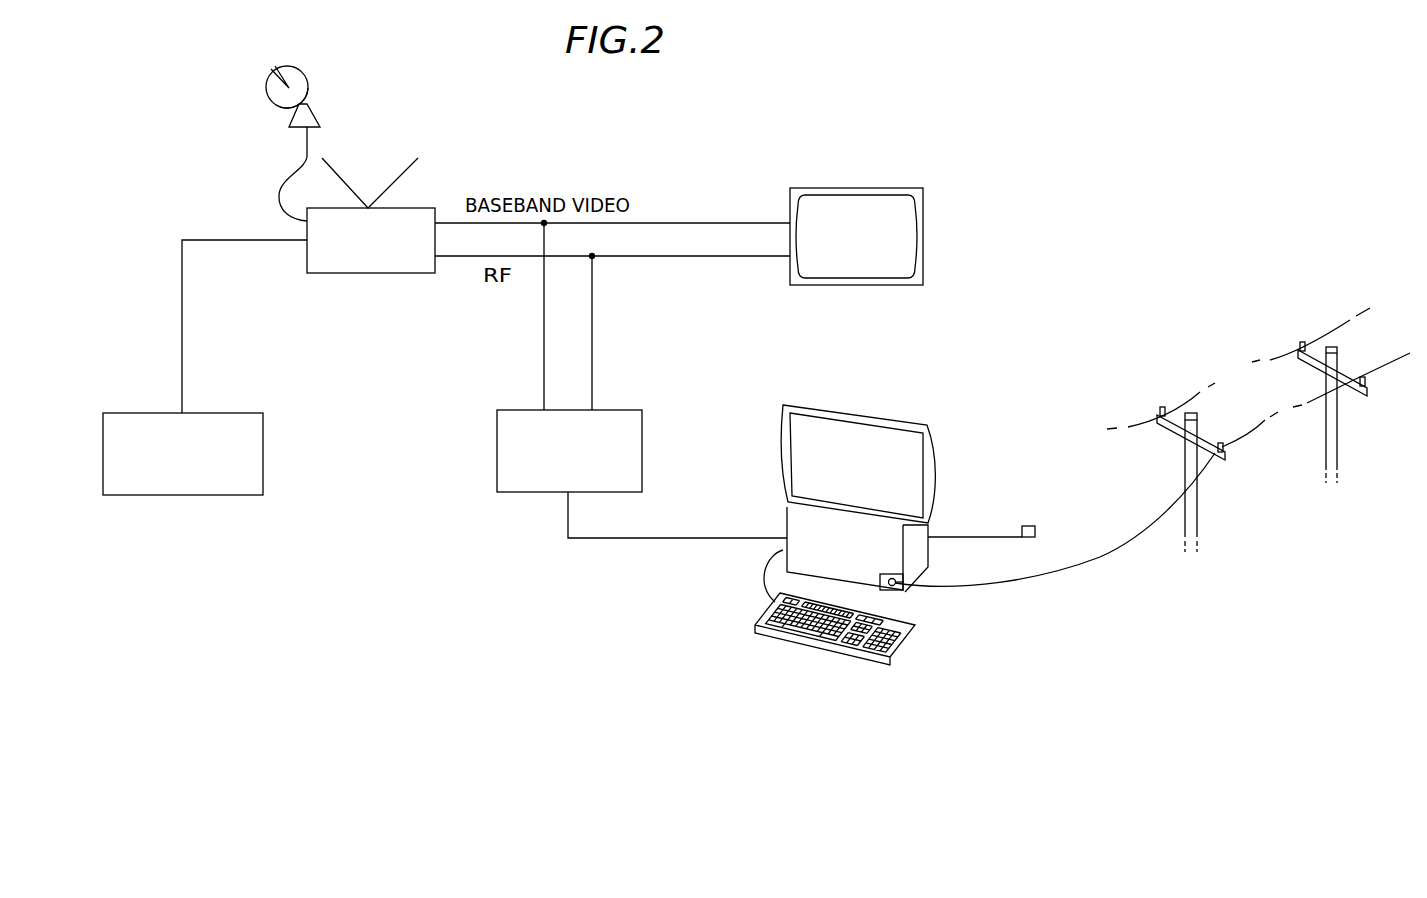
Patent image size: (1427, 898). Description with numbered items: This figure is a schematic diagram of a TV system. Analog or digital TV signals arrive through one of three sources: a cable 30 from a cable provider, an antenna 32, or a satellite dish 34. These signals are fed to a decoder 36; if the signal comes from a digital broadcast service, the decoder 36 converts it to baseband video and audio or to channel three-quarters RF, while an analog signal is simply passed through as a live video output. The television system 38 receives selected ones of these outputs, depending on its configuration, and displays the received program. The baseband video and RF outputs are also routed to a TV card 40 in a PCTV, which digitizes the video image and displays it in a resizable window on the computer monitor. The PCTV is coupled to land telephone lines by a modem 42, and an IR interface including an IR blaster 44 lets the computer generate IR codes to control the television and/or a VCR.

The cable 30 is at (182, 240).
The antenna 32 is at (412, 166).
The satellite dish 34 is at (300, 60).
The decoder 36 is at (370, 273).
The television system 38 is at (903, 186).
The TV card 40 is at (520, 492).
The modem 42 is at (907, 592).
The IR blaster 44 is at (1028, 526).